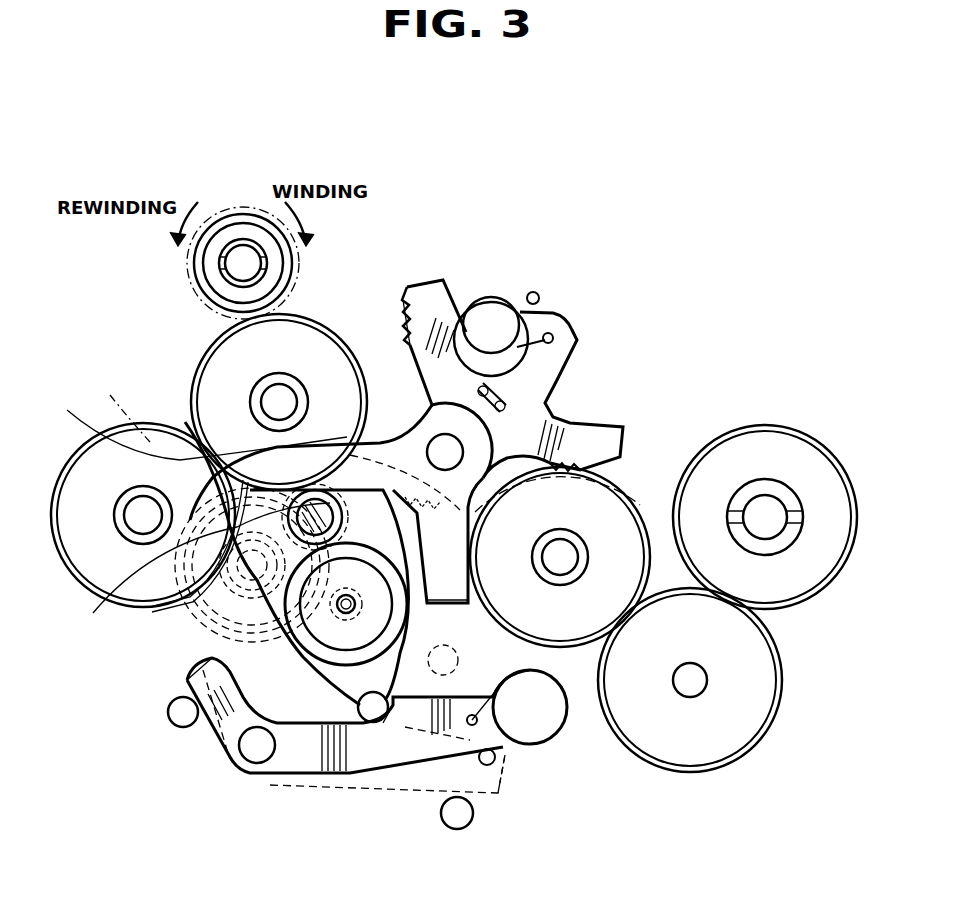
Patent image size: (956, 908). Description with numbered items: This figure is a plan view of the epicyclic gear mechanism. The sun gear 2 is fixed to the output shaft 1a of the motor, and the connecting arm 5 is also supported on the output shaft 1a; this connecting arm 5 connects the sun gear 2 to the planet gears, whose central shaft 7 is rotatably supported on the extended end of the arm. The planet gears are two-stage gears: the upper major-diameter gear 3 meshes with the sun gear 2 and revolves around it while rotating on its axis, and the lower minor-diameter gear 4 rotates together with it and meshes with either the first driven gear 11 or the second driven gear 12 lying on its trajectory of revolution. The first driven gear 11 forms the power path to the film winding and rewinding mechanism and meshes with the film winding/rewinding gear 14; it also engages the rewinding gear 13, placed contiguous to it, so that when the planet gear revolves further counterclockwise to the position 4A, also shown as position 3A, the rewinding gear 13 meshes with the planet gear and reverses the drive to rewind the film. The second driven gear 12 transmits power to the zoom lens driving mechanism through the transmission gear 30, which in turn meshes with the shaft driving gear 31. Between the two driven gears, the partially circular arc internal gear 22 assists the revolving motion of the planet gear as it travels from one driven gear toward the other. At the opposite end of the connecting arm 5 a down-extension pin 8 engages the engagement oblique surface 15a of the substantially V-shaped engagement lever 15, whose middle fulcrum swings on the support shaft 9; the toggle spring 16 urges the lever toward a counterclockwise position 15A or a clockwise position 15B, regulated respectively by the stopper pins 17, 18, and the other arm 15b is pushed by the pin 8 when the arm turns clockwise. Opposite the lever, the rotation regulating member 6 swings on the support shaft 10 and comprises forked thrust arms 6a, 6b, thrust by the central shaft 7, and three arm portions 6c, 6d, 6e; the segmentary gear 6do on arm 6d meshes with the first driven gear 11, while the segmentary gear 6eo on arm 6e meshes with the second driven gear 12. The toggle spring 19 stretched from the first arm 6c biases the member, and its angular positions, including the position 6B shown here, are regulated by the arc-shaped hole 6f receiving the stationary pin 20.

The output shaft 1a is at (344, 614).
The sun gear 2 is at (290, 660).
The upper major-diameter planet gear 3 is at (105, 432).
The position of planet gear 3A is at (190, 605).
The lower minor-diameter planet gear 4 is at (93, 613).
The position of planet gear 4A is at (225, 618).
The connecting arm 5 is at (358, 655).
The rotation regulating member 6 is at (567, 337).
The thrust arm 6a is at (307, 463).
The thrust arm 6b is at (443, 606).
The first arm 6c is at (563, 330).
The second arm 6d is at (423, 280).
The engagement segmentary gear 6do is at (402, 320).
The third arm 6e is at (603, 433).
The engagement segmentary gear 6eo is at (610, 470).
The partially circular arc rotation regulating hole 6f is at (553, 380).
The position of rotation regulating member 6B is at (567, 412).
The central shaft 7 is at (305, 495).
The down-extension pin 8 is at (372, 722).
The support shaft 9 is at (250, 750).
The support shaft 10 is at (444, 450).
The first driven gear 11 is at (225, 362).
The second driven gear 12 is at (557, 632).
The rewinding gear 13 is at (118, 404).
The film winding/rewinding gear 14 is at (237, 250).
The engagement lever 15 is at (305, 760).
The angular position of engagement lever 15A is at (452, 693).
The angular position of engagement lever 15B is at (503, 776).
The engagement oblique surface 15a is at (383, 735).
The other arm of engagement lever 15b is at (185, 682).
The toggle spring 16 is at (543, 740).
The stopper pin 17 is at (183, 720).
The stopper pin 18 is at (460, 822).
The toggle spring 19 is at (489, 300).
The stationary pin 20 is at (466, 330).
The internal gear 22 is at (612, 500).
The transmission gear 30 is at (768, 712).
The shaft driving gear 31 is at (742, 437).